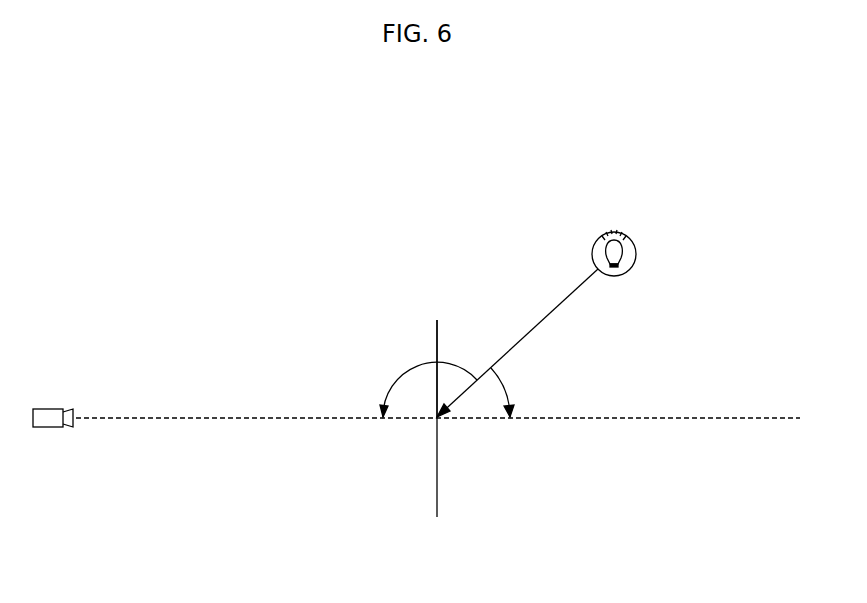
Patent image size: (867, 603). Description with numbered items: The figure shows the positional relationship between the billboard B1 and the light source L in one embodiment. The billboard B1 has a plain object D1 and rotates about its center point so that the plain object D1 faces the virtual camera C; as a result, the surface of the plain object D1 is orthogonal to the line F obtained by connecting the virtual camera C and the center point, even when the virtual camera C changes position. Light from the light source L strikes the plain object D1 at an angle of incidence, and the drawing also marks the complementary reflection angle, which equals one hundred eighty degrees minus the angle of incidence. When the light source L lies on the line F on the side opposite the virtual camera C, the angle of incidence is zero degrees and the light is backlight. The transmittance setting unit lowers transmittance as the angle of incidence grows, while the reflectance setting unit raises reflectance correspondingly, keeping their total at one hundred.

The virtual camera C is at (47, 427).
The line segment F is at (214, 420).
The billboard B1 is at (417, 499).
The plain object D1 is at (437, 338).
The light source L is at (636, 253).